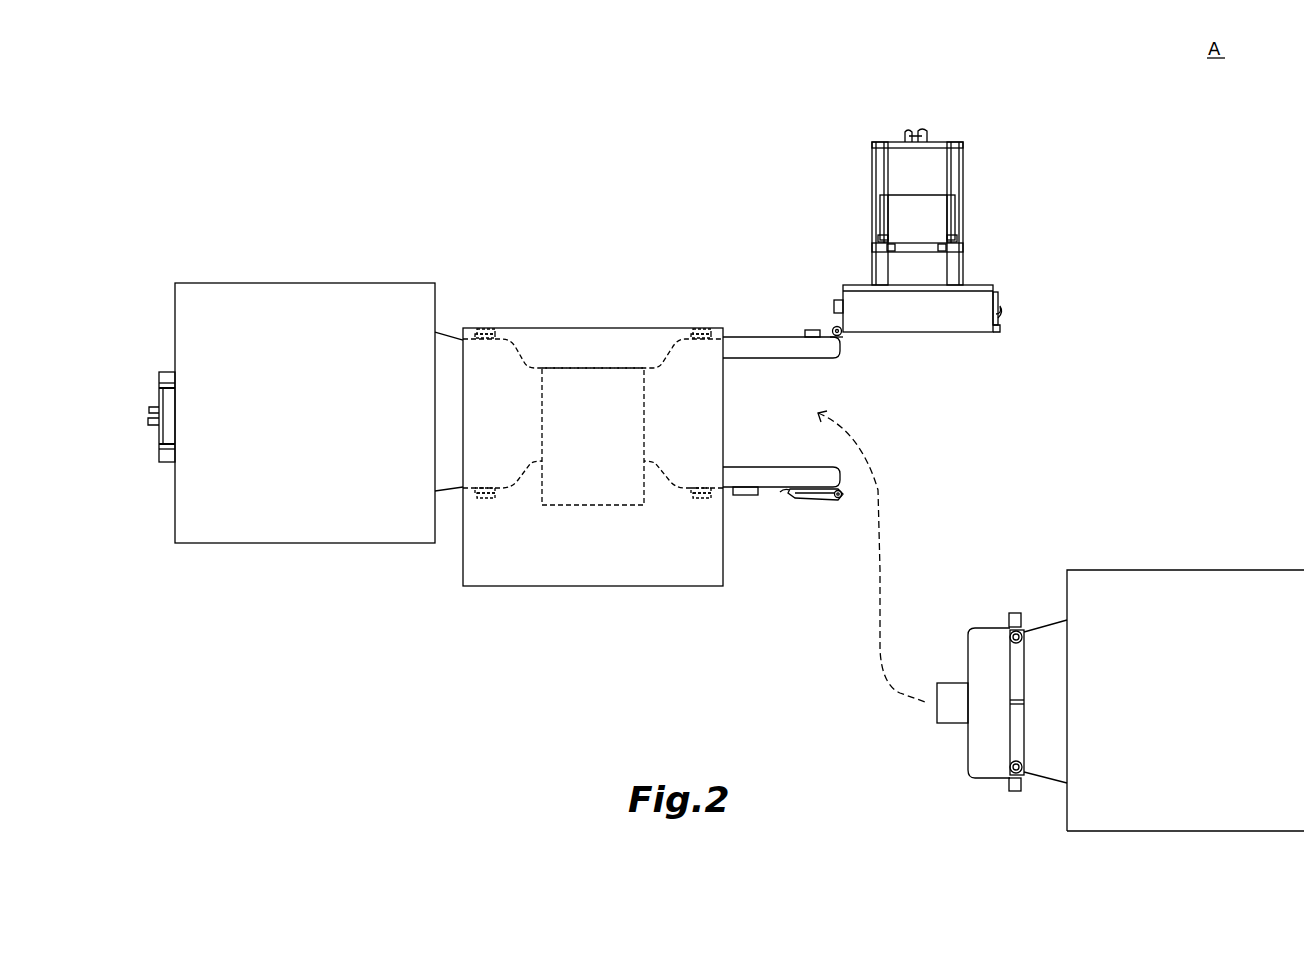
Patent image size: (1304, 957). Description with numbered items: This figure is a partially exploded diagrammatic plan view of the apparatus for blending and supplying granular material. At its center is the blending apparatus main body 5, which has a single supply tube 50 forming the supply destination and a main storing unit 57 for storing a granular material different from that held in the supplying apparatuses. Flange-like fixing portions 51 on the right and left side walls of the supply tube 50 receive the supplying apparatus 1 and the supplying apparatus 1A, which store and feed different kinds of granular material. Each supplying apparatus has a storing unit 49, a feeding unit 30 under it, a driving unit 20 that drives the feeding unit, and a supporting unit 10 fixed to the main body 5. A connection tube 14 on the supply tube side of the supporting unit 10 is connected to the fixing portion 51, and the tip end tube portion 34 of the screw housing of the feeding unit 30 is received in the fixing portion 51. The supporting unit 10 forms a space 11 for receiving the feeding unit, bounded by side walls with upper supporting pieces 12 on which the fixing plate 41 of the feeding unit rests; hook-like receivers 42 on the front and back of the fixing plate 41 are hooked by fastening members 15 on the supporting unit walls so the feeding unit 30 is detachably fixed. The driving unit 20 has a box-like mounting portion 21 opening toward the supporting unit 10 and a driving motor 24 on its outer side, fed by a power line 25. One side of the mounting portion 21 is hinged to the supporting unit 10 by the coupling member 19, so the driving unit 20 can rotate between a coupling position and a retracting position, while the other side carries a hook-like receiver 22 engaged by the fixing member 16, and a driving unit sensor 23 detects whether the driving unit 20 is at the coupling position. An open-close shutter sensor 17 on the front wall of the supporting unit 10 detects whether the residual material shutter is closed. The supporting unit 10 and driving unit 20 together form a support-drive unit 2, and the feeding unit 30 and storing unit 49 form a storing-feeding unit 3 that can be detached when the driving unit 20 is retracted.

The supplying apparatus 1A is at (318, 270).
The supplying apparatus 1 is at (1103, 396).
The support-drive unit 2 is at (1052, 390).
The storing-feeding unit 3 is at (1143, 520).
The blending apparatus main body 5 is at (597, 298).
The supporting unit 10 is at (764, 322).
The space for receiving the feeding unit 11 is at (810, 381).
The upper supporting piece 12 is at (738, 357).
The connection tube 14 is at (529, 345).
The fastening member 15 is at (485, 329).
The fixing member 16 is at (836, 500).
The open-close shutter sensor 17 is at (746, 495).
The coupling member 19 is at (833, 328).
The driving unit 20 is at (1008, 218).
The mounting portion 21 is at (948, 317).
The hook-like receiver 22 is at (1002, 313).
The driving unit sensor 23 is at (1000, 332).
The driving motor 24 is at (165, 465).
The power line 25 is at (153, 427).
The feeding unit 30 is at (979, 792).
The tip end tube portion 34 is at (953, 688).
The fixing plate 41 is at (460, 487).
The hook-like receiver 42 is at (1013, 613).
The storing unit 49 is at (310, 544).
The supply tube 50 is at (592, 505).
The fixing portion 51 is at (537, 488).
The main storing unit 57 is at (660, 575).